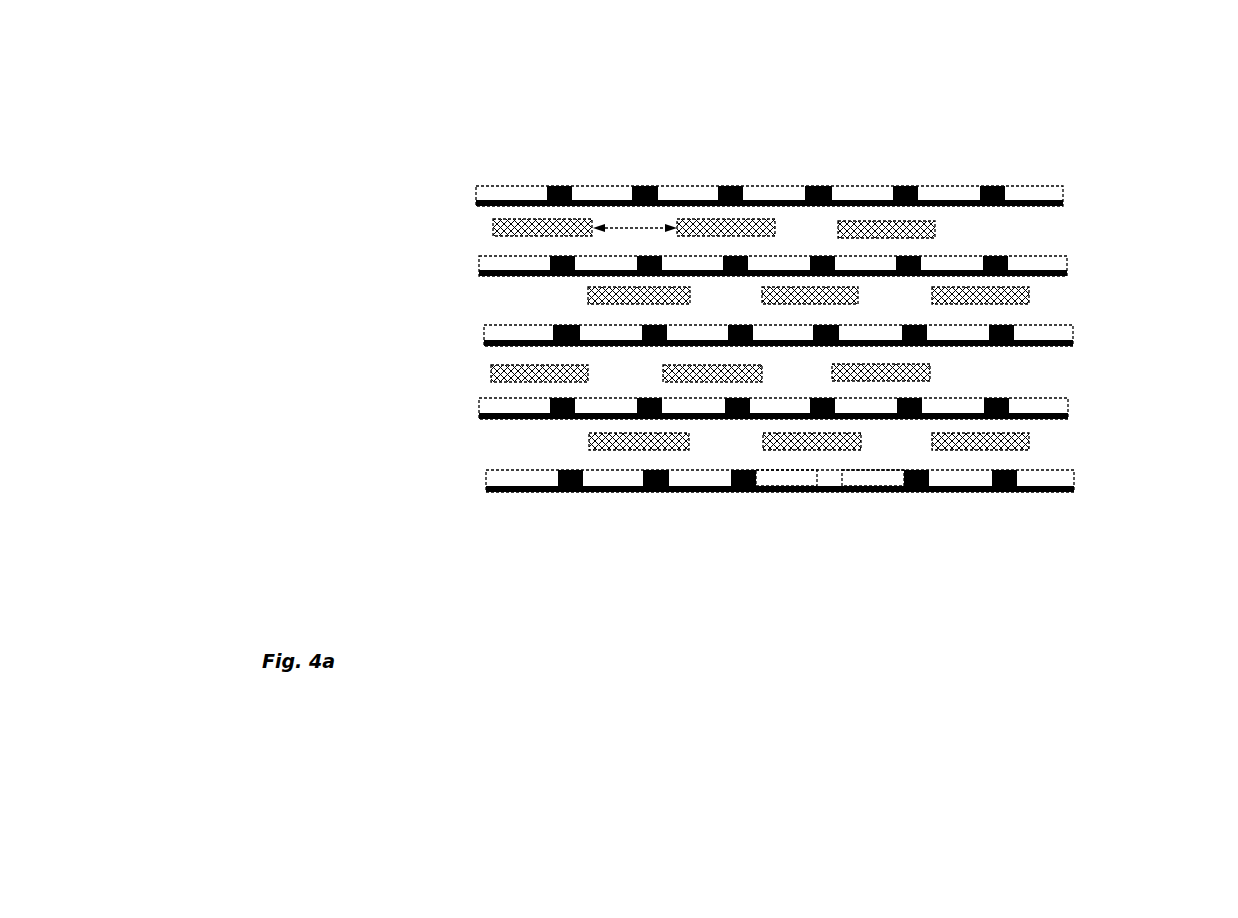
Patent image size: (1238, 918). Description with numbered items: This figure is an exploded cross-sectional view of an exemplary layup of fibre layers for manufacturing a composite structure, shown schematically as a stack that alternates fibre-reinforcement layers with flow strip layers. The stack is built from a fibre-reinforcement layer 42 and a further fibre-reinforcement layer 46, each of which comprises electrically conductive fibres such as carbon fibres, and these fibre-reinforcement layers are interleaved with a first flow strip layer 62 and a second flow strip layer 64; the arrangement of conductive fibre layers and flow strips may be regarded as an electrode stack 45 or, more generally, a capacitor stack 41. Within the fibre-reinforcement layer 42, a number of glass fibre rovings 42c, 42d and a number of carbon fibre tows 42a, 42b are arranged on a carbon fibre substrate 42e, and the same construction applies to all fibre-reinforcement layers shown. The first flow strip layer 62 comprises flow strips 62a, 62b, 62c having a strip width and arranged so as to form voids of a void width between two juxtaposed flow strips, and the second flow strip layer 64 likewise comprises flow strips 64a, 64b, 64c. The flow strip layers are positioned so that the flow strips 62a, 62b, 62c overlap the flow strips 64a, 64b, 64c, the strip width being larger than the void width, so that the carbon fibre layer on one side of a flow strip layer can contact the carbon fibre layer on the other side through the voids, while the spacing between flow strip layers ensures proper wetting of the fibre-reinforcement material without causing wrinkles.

The capacitor stack 41 is at (718, 336).
The electrode stack 45 is at (718, 336).
The fibre-reinforcement layer 42 is at (695, 377).
The fibre-reinforcement layer 46 is at (711, 377).
The carbon fibre tow 42a is at (575, 492).
The carbon fibre tow 42b is at (657, 492).
The glass fibre roving 42c is at (780, 492).
The glass fibre roving 42d is at (867, 492).
The carbon fibre substrate 42e is at (1063, 205).
The flow strip layer 62 is at (629, 222).
The flow strip 62a is at (538, 219).
The flow strip 62b is at (727, 183).
The flow strip 62c is at (712, 219).
The flow strip layer 64 is at (897, 256).
The flow strip 64a is at (670, 287).
The flow strip 64b is at (835, 287).
The flow strip 64c is at (955, 287).